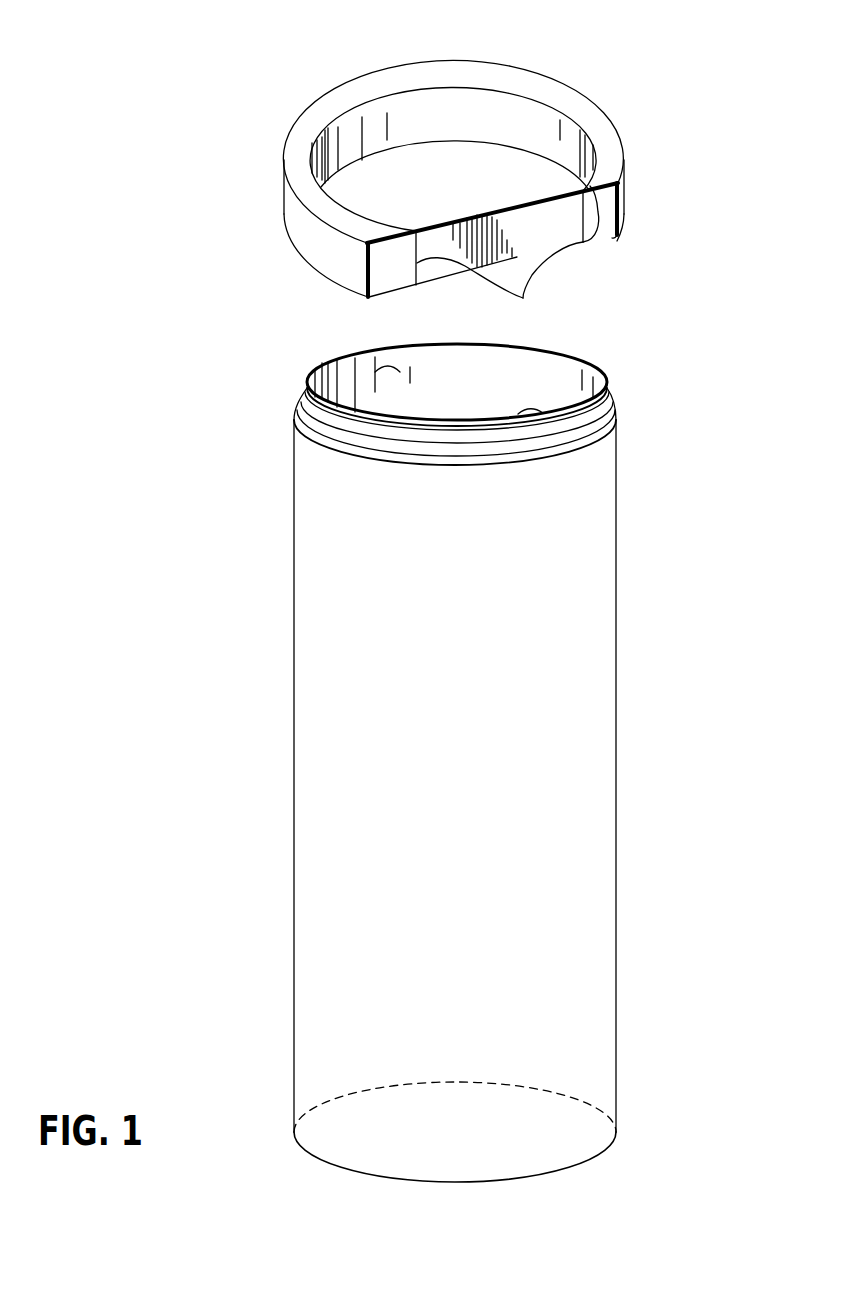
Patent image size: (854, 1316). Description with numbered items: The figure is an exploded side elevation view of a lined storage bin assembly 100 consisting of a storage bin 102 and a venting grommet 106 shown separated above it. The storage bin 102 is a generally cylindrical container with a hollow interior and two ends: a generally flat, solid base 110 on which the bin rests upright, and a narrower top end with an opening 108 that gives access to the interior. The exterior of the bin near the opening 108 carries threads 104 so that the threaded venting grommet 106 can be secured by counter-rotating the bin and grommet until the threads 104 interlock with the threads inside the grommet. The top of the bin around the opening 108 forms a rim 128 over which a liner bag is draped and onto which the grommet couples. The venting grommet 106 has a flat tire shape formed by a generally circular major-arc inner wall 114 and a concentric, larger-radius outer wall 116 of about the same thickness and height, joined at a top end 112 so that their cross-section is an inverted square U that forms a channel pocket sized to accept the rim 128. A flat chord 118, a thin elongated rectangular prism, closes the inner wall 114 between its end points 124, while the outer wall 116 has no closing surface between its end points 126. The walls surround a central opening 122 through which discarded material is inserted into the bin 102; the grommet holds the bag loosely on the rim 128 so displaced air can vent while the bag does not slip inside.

The container assembly 100 is at (222, 486).
The storage bin 102 is at (294, 855).
The threads 104 is at (608, 390).
The venting grommet 106 is at (683, 217).
The opening 108 is at (312, 380).
The base 110 is at (357, 1140).
The top end 112 is at (322, 117).
The inner wall 114 is at (513, 113).
The outer wall 116 is at (293, 227).
The chord 118 is at (533, 225).
The central opening 122 is at (437, 157).
The end points 124 is at (500, 289).
The end points 126 is at (627, 203).
The rim 128 is at (543, 413).